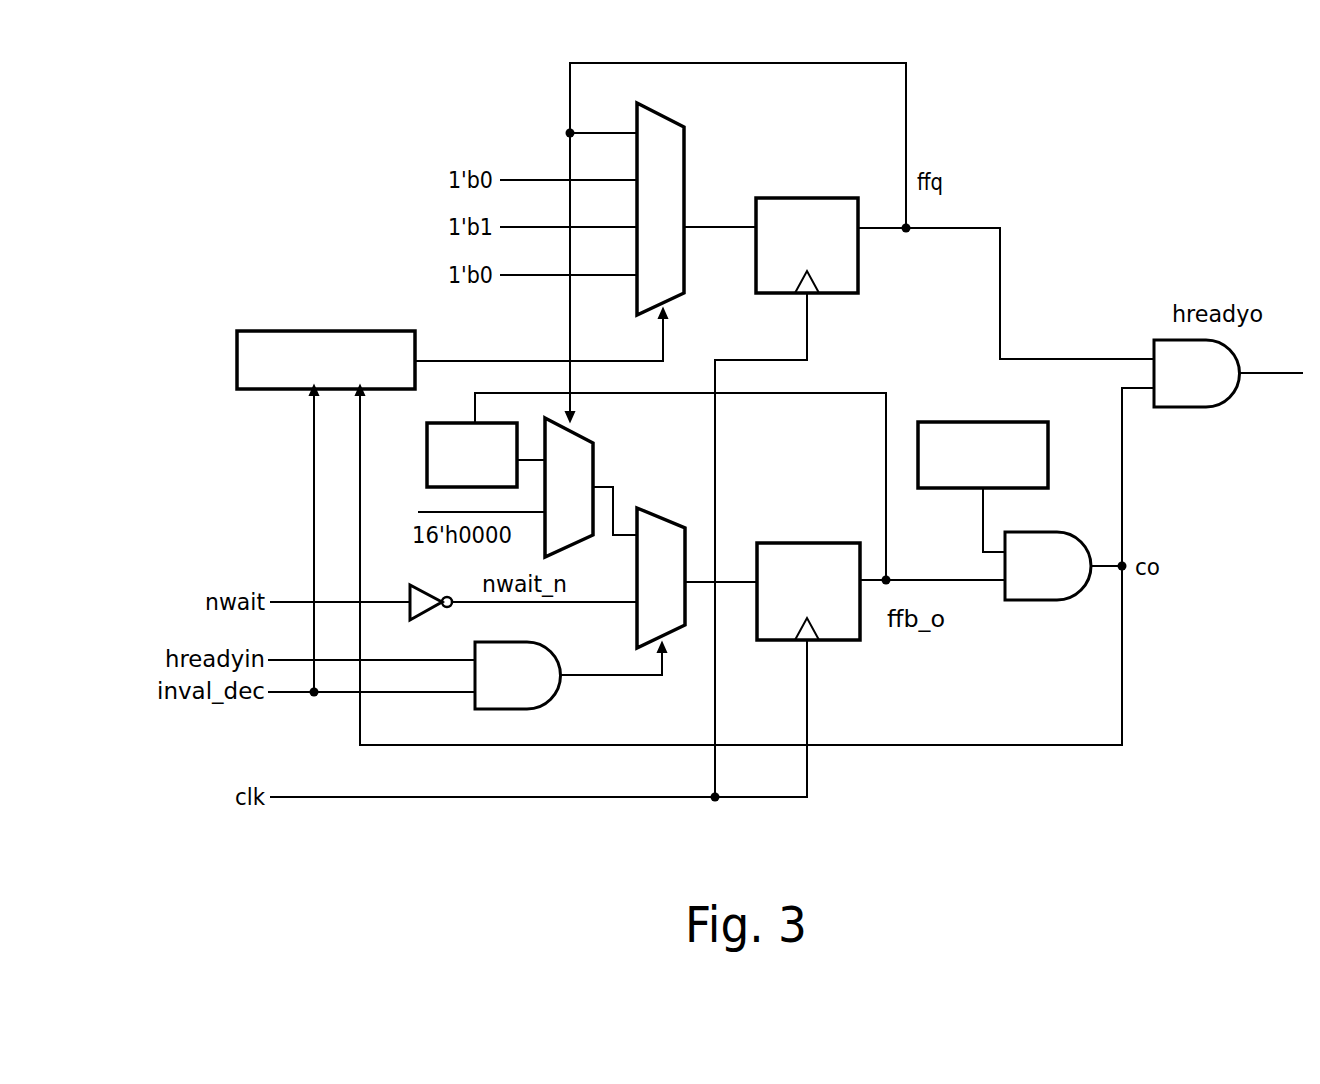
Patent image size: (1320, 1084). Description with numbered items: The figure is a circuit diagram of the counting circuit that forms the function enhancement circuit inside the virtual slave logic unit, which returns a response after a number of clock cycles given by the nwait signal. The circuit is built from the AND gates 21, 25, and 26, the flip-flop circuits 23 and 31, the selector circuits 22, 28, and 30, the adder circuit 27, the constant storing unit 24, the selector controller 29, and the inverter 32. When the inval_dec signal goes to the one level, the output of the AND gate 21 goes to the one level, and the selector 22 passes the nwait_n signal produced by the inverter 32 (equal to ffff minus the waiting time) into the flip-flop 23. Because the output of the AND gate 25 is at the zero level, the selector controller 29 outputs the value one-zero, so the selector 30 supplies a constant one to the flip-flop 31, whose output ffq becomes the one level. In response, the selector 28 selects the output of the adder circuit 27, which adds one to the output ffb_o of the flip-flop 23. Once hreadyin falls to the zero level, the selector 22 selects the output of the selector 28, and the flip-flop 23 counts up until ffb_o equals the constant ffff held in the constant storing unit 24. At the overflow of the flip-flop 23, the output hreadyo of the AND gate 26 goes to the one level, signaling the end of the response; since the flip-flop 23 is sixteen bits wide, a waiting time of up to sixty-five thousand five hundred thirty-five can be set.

The AND gate 21 is at (554, 690).
The selector circuit 22 is at (668, 520).
The flip-flop circuit 23 is at (806, 542).
The constant storing unit 24 is at (982, 421).
The AND gate 25 is at (1038, 602).
The AND gate 26 is at (1191, 409).
The adder circuit 27 is at (427, 448).
The selector circuit 28 is at (598, 452).
The selector controller 29 is at (322, 330).
The selector circuit 30 is at (697, 108).
The flip-flop circuit 31 is at (806, 197).
The inverter 32 is at (410, 585).